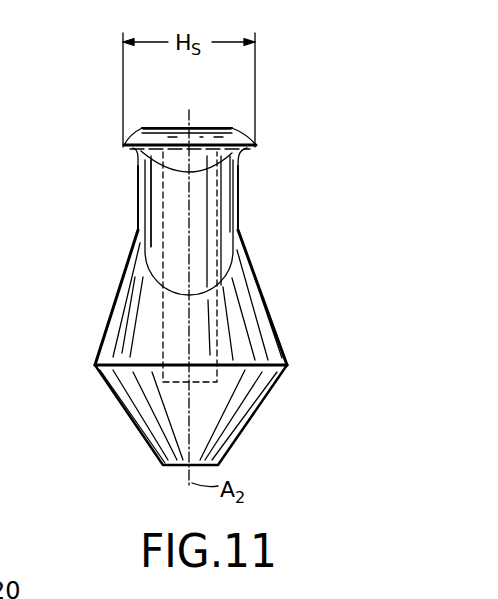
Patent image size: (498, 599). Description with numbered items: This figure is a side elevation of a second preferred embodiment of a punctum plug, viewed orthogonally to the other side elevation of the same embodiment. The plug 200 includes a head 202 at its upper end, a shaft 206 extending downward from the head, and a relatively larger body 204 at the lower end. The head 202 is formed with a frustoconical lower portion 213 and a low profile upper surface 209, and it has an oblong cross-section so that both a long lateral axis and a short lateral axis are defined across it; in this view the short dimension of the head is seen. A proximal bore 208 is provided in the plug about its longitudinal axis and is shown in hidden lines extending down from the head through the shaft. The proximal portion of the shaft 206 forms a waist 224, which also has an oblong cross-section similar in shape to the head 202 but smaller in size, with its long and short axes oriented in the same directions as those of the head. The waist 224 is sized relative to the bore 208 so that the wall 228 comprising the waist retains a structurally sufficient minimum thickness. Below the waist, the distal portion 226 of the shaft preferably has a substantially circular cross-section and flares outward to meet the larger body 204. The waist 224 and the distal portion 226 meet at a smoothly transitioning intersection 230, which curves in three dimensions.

The plug 200 is at (277, 27).
The head 202 is at (207, 128).
The body 204 is at (245, 430).
The shaft 206 is at (322, 150).
The proximal bore 208 is at (162, 307).
The low profile upper surface 209 is at (145, 128).
The frustoconical lower portion 213 is at (135, 150).
The waist 224 is at (253, 153).
The distal portion 226 is at (123, 336).
The wall 228 is at (151, 197).
The intersection 230 is at (147, 256).